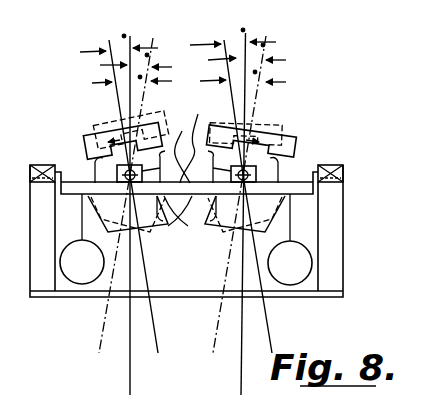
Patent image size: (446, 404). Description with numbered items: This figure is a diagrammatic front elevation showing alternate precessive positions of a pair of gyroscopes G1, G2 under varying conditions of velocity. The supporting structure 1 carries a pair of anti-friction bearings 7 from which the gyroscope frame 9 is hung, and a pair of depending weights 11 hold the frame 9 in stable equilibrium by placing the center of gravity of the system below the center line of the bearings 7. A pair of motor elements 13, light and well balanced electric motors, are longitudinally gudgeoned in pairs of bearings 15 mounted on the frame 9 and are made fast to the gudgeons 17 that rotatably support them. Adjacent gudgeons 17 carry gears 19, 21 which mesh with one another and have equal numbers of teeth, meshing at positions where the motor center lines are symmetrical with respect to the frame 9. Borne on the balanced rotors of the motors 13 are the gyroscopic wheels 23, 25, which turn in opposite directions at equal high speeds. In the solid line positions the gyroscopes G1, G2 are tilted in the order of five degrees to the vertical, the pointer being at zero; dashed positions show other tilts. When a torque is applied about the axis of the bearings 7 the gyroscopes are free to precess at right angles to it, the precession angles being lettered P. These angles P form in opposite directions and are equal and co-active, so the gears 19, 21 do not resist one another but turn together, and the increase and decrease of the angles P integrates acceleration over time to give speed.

The supporting structure 1 is at (331, 249).
The anti-friction bearings 7 is at (30, 174).
The gyroscope frame 9 is at (200, 205).
The depending weights 11 is at (186, 239).
The motor elements 13 is at (166, 228).
The bearings 15 is at (104, 172).
The gudgeons 17 is at (186, 214).
The gear 19 is at (181, 147).
The gear 21 is at (196, 140).
The gyroscopic wheel 23 is at (80, 146).
The gyroscopic wheel 25 is at (296, 148).
The gyroscope G1 is at (98, 214).
The gyroscope G2 is at (272, 211).
The precession angle P is at (131, 94).